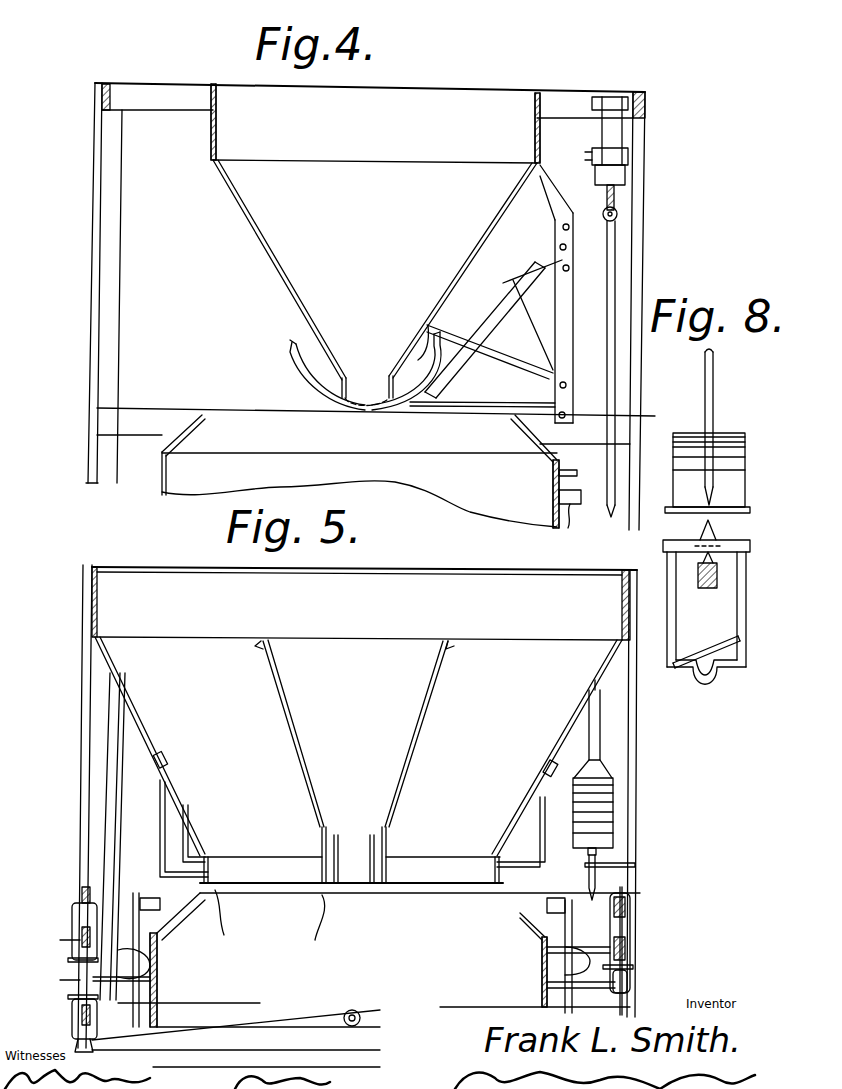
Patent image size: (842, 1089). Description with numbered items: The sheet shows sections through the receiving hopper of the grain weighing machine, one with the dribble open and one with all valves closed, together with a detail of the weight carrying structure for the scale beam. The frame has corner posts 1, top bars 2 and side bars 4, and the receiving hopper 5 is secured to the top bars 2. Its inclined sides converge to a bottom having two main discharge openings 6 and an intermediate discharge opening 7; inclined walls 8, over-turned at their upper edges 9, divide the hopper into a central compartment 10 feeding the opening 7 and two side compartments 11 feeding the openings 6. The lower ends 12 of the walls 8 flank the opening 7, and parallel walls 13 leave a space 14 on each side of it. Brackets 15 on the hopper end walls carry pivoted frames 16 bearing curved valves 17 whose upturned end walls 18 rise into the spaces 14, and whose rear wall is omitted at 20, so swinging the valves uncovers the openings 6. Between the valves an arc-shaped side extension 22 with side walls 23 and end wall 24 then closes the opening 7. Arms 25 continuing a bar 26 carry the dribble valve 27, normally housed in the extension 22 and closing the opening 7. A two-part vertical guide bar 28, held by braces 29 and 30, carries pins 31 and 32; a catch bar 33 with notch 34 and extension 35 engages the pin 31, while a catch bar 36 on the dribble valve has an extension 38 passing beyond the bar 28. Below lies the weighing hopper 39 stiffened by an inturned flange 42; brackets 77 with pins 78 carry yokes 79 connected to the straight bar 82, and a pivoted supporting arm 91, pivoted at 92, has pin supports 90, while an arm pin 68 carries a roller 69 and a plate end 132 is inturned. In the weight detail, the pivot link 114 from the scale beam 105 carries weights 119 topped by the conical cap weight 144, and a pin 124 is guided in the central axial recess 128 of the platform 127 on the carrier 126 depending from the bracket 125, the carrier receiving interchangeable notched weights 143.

In FIG. 4, the corner posts 1 is at (118, 318).
In FIG. 5, the corner posts 1 is at (638, 826).
In FIG. 4, the top bars 2 is at (190, 103).
In FIG. 4, the side bars 4 is at (150, 420).
In FIG. 4, the receiving hopper 5 is at (375, 241).
In FIG. 5, the receiving hopper 5 is at (364, 603).
In FIG. 5, the discharge openings 6 is at (244, 850).
In FIG. 4, the intermediate discharge opening 7 is at (372, 402).
In FIG. 5, the intermediate discharge opening 7 is at (356, 856).
In FIG. 5, the walls 8 is at (305, 748).
In FIG. 5, the over-turned portions 9 is at (264, 640).
In FIG. 5, the central compartment 10 is at (354, 693).
In FIG. 5, the side compartments 11 is at (358, 746).
In FIG. 5, the lower ends of hopper walls 12 is at (355, 885).
In FIG. 5, the walls 13 is at (325, 842).
In FIG. 5, the space 14 is at (378, 830).
In FIG. 5, the brackets 15 is at (168, 770).
In FIG. 5, the frames 16 is at (158, 833).
In FIG. 5, the valves 17 is at (275, 884).
In FIG. 5, the upturned end walls 18 is at (271, 924).
In FIG. 5, the open rear wall 20 is at (258, 875).
In FIG. 4, the arc-shaped side extension 22 is at (312, 362).
In FIG. 4, the side walls 23 is at (320, 368).
In FIG. 4, the end wall 24 is at (312, 342).
In FIG. 5, the arms 25 is at (178, 812).
In FIG. 4, the bar 26 is at (438, 336).
In FIG. 5, the bar 26 is at (190, 855).
In FIG. 4, the valve 27 is at (420, 356).
In FIG. 4, the vertical guide bar 28 is at (562, 236).
In FIG. 4, the brace 29 is at (556, 194).
In FIG. 4, the brace 30 is at (528, 362).
In FIG. 4, the pin 31 is at (610, 270).
In FIG. 4, the pin 32 is at (556, 418).
In FIG. 4, the catch bar 33 is at (470, 358).
In FIG. 4, the notch 34 is at (515, 286).
In FIG. 4, the extension 35 is at (538, 272).
In FIG. 4, the catch bar 36 is at (524, 400).
In FIG. 4, the extension 38 is at (630, 444).
In FIG. 5, the weighing hopper 39 is at (378, 1008).
In FIG. 5, the inturned flange 42 is at (170, 925).
In FIG. 5, the pin 68 is at (545, 925).
In FIG. 5, the roller 69 is at (150, 898).
In FIG. 5, the brackets 77 is at (250, 1003).
In FIG. 5, the pin 78 is at (72, 975).
In FIG. 5, the yoke 79 is at (72, 925).
In FIG. 5, the straight bar 82 is at (628, 925).
In FIG. 5, the pin support 90 is at (75, 1035).
In FIG. 5, the pivoted supporting arm 91 is at (290, 1022).
In FIG. 5, the pivot support 92 is at (360, 1015).
In FIG. 8, the scale beam 105 is at (700, 588).
In FIG. 8, the pivot link 114 is at (668, 652).
In FIG. 5, the weights 119 is at (616, 806).
In FIG. 8, the pin 124 is at (720, 532).
In FIG. 8, the bracket 125 is at (663, 546).
In FIG. 8, the carrier 126 is at (718, 416).
In FIG. 8, the platform 127 is at (735, 470).
In FIG. 8, the central axial recess 128 is at (740, 480).
In FIG. 4, the inturned end 132 is at (552, 464).
In FIG. 8, the weights 143 is at (690, 448).
In FIG. 5, the conical cap weight 144 is at (605, 775).